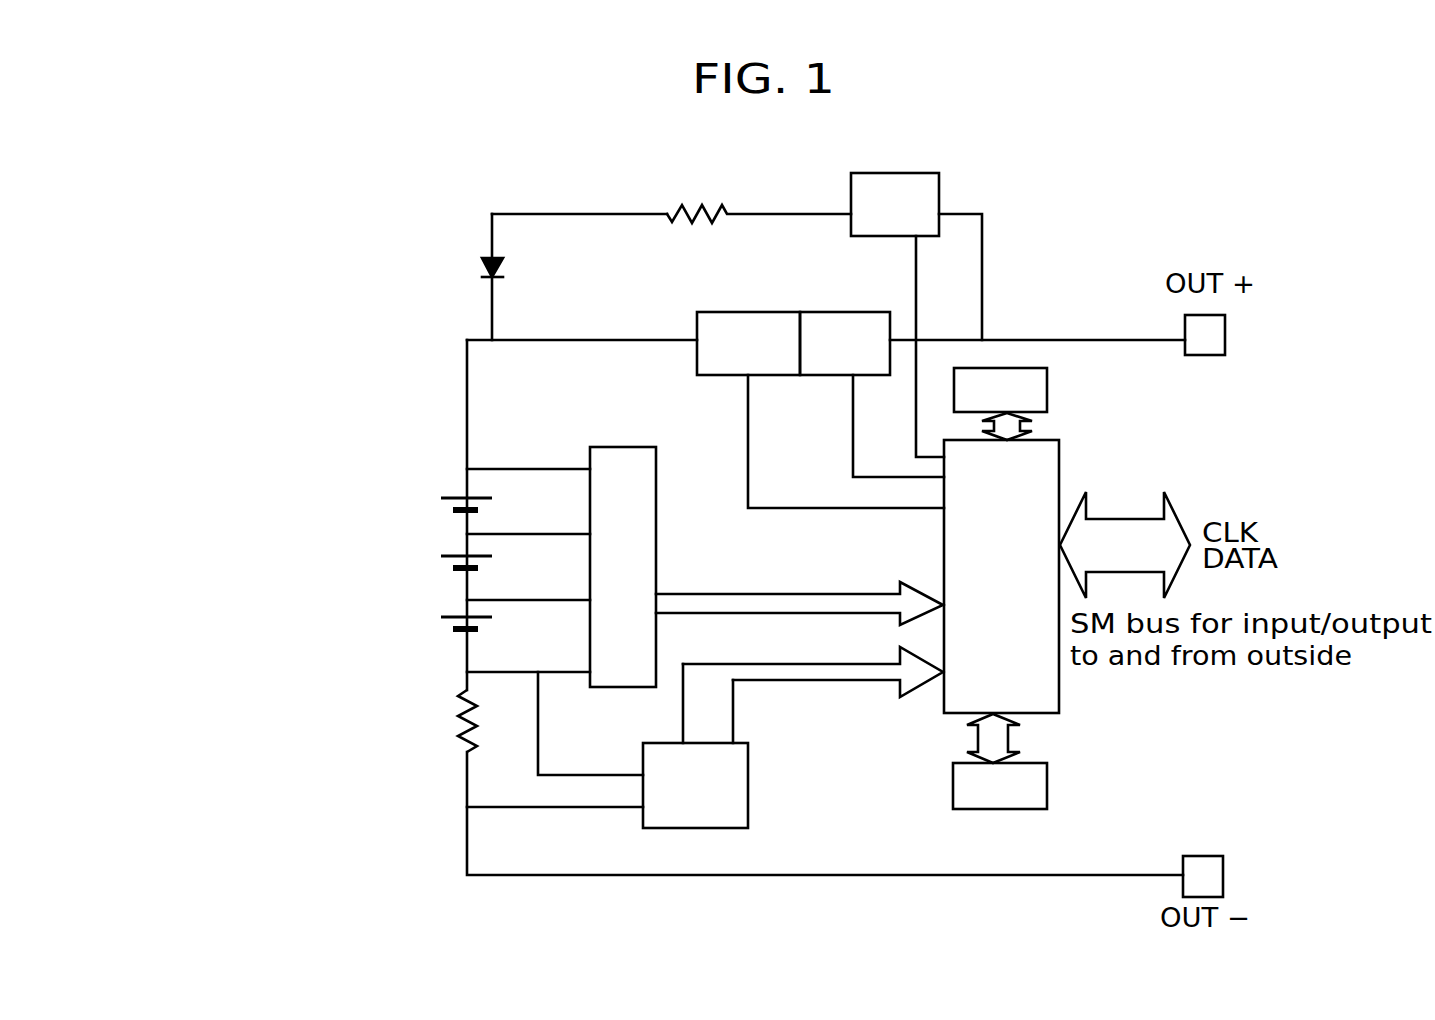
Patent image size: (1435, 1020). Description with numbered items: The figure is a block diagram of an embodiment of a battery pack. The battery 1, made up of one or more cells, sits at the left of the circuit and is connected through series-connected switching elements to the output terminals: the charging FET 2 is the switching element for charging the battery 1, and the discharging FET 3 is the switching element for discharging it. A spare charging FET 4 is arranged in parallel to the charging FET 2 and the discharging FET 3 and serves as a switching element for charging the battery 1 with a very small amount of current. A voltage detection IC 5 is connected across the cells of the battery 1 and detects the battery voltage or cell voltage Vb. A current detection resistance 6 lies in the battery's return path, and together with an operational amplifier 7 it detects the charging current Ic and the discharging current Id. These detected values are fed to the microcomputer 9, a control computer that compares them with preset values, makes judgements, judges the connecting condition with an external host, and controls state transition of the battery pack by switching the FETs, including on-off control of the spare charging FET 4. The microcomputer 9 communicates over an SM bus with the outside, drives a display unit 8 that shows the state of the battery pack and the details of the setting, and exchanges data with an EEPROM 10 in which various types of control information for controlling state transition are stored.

The battery 1 is at (445, 555).
The charging FET 2 is at (838, 300).
The discharging FET 3 is at (722, 305).
The spare charging FET 4 is at (939, 178).
The voltage detection IC 5 is at (656, 533).
The current detection resistance 6 is at (458, 720).
The operational amplifier 7 is at (748, 815).
The display unit 8 is at (1047, 393).
The microcomputer 9 is at (1059, 455).
The EEPROM 10 is at (1047, 785).